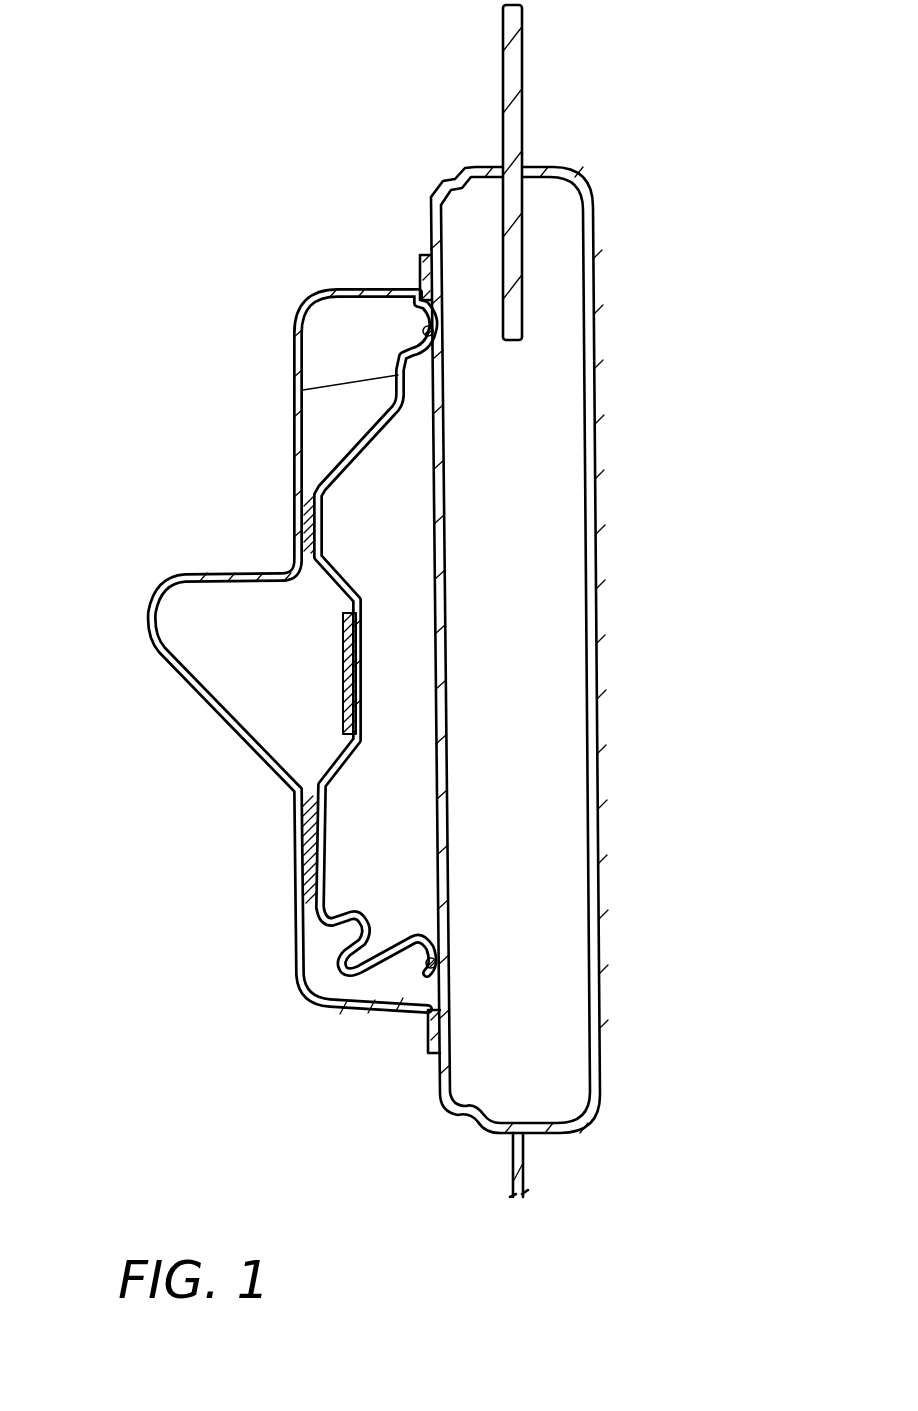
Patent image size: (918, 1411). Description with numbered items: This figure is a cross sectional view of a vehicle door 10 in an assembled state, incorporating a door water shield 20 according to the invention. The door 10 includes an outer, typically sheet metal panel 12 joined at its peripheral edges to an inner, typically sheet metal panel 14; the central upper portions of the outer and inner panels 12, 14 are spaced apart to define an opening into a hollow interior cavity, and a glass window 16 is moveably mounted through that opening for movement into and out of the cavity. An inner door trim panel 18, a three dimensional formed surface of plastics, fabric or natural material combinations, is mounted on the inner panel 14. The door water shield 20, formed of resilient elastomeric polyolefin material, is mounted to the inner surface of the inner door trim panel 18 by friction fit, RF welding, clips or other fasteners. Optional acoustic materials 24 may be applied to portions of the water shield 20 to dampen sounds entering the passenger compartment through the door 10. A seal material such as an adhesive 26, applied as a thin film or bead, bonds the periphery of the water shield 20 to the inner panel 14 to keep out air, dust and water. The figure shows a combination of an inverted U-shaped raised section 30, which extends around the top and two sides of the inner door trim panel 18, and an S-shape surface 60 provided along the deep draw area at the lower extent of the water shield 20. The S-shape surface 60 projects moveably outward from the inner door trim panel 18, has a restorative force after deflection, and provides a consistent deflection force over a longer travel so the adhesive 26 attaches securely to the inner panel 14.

The vehicle door 10 is at (358, 606).
The outer panel 12 is at (594, 322).
The inner panel 14 is at (470, 1121).
The glass window 16 is at (502, 84).
The inner door trim panel 18 is at (150, 645).
The door water shield 20 is at (291, 616).
The acoustic materials 24 is at (342, 640).
The adhesive 26 is at (443, 327).
The inverted U-shaped raised section 30 is at (405, 290).
The S-shape surface 60 is at (322, 985).